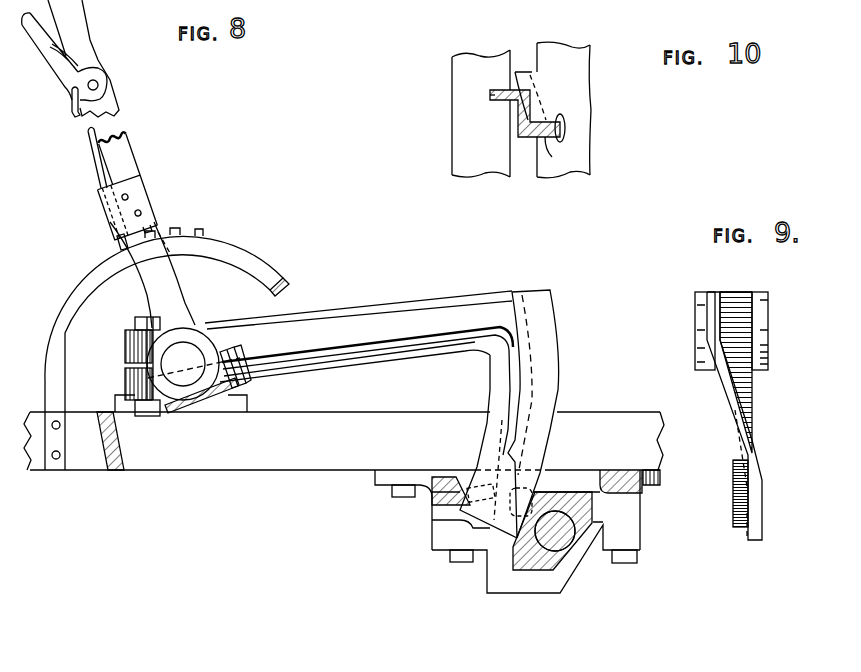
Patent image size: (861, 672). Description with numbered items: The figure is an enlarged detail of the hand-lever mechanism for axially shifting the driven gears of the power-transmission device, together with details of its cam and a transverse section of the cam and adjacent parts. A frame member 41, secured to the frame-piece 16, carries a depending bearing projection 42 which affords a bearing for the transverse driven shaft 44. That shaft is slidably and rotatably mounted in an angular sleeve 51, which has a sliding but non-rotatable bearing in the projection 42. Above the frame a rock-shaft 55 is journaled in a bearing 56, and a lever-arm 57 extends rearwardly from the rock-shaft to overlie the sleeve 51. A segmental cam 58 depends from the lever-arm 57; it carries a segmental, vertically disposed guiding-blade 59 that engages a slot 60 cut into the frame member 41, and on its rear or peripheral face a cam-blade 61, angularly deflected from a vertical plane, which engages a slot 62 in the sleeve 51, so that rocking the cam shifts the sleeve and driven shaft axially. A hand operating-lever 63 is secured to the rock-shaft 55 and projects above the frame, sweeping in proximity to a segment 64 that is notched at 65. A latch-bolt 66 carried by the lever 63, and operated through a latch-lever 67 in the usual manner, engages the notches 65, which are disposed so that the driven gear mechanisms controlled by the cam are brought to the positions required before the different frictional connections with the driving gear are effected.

In FIG. 8, the frame-piece 16 is at (344, 448).
In FIG. 8, the frame member 41 is at (425, 483).
In FIG. 10, the frame member 41 is at (470, 82).
In FIG. 8, the bearing projection 42 is at (500, 583).
In FIG. 8, the driven shaft 44 is at (563, 540).
In FIG. 8, the angular sleeve 51 is at (546, 577).
In FIG. 10, the angular sleeve 51 is at (585, 105).
In FIG. 8, the rock-shaft 55 is at (186, 360).
In FIG. 8, the bearing 56 is at (230, 395).
In FIG. 8, the lever-arm 57 is at (372, 348).
In FIG. 8, the segmental cam 58 is at (522, 320).
In FIG. 10, the segmental cam 58 is at (530, 97).
In FIG. 9, the segmental cam 58 is at (733, 383).
In FIG. 8, the guiding-blade 59 is at (500, 388).
In FIG. 10, the guiding-blade 59 is at (515, 72).
In FIG. 9, the guiding-blade 59 is at (727, 387).
In FIG. 8, the slot 60 is at (450, 518).
In FIG. 10, the slot 60 is at (490, 100).
In FIG. 8, the cam-blade 61 is at (543, 362).
In FIG. 10, the cam-blade 61 is at (564, 155).
In FIG. 9, the cam-blade 61 is at (747, 450).
In FIG. 8, the slot 62 is at (535, 495).
In FIG. 10, the slot 62 is at (567, 130).
In FIG. 8, the hand operating-lever 63 is at (127, 157).
In FIG. 8, the segment 64 is at (242, 247).
In FIG. 8, the notches 65 is at (200, 227).
In FIG. 8, the latch-bolt 66 is at (100, 178).
In FIG. 8, the clip lever 67 is at (52, 66).